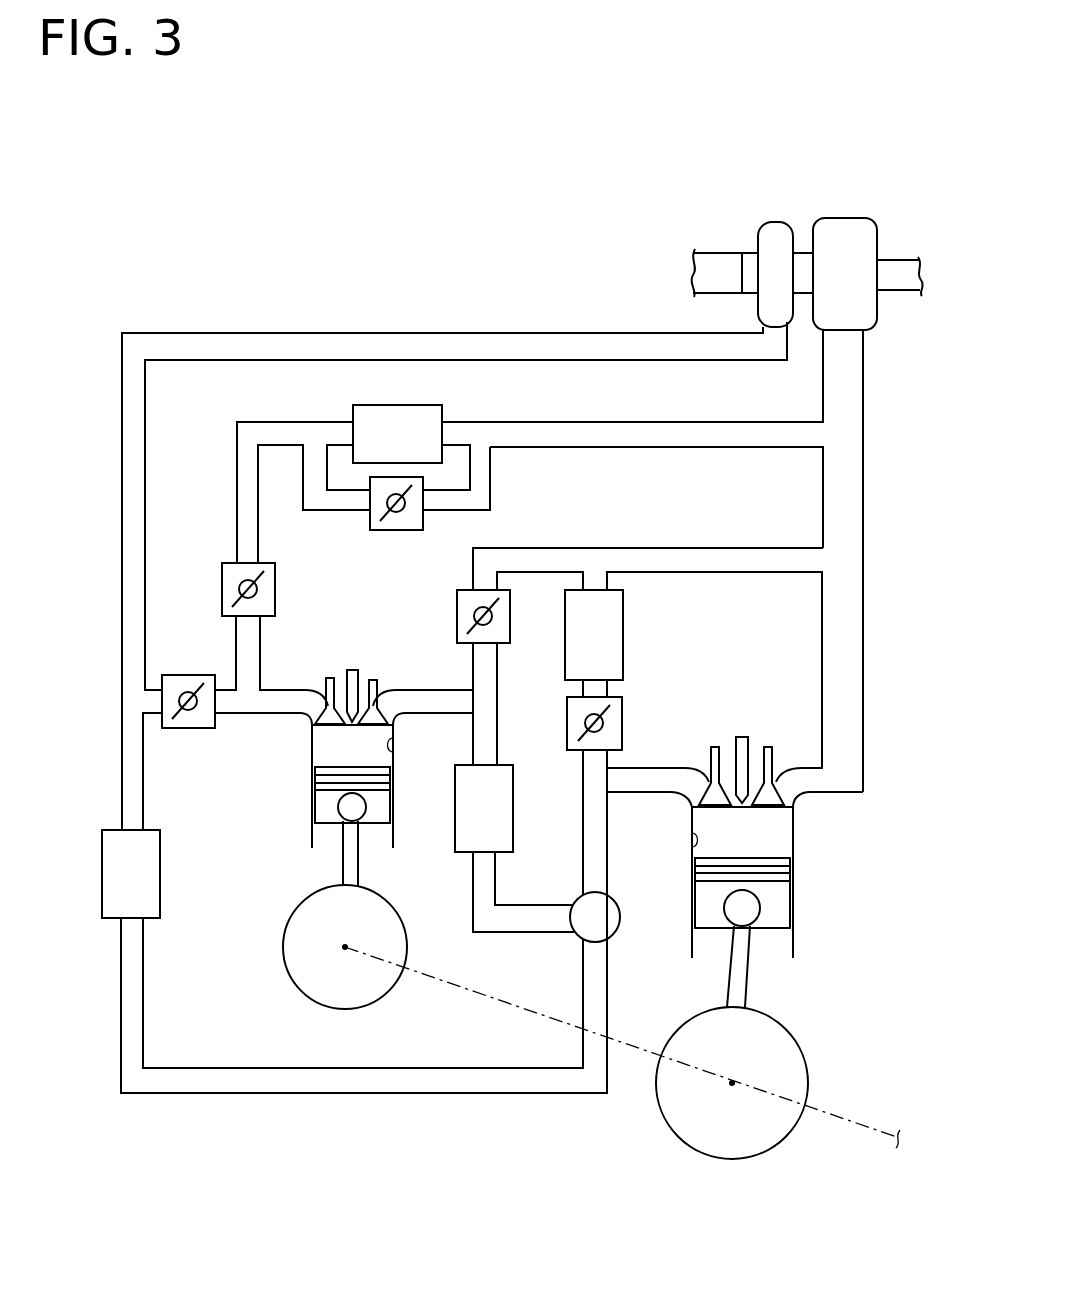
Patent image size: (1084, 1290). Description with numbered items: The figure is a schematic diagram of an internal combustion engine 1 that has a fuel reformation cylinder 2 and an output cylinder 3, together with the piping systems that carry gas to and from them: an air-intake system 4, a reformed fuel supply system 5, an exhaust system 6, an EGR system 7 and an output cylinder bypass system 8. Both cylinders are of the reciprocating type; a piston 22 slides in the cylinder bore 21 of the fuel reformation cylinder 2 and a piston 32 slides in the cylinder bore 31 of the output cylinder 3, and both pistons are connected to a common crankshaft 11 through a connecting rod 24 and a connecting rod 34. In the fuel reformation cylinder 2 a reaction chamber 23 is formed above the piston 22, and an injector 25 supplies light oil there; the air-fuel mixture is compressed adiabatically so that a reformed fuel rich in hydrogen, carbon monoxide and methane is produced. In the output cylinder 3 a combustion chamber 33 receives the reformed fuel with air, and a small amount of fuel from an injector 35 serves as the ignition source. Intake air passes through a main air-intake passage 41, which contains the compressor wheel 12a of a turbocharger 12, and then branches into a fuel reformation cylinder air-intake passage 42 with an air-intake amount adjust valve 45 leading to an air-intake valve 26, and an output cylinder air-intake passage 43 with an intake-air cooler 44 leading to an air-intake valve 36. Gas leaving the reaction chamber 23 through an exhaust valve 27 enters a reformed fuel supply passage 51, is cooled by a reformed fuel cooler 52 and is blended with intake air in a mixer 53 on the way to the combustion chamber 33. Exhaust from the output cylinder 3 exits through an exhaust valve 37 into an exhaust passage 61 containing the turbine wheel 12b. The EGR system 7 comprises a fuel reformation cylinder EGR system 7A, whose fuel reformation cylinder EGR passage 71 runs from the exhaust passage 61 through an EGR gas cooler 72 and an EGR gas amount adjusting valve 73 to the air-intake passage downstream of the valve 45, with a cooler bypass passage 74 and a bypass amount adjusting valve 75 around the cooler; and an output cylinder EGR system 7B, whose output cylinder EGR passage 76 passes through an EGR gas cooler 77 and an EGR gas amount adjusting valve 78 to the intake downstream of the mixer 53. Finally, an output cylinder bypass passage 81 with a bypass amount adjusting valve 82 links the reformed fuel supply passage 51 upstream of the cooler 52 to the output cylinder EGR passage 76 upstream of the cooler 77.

The internal combustion engine 1 is at (187, 206).
The fuel reformation cylinder 2 is at (347, 810).
The cylinder bore 21 is at (396, 742).
The piston 22 is at (385, 810).
The reaction chamber 23 is at (330, 747).
The connecting rod 24 is at (340, 867).
The injector 25 is at (355, 668).
The air-intake valve 26 is at (330, 676).
The exhaust valve 27 is at (380, 678).
The output cylinder 3 is at (746, 918).
The cylinder bore 31 is at (692, 840).
The piston 32 is at (700, 912).
The combustion chamber 33 is at (792, 838).
The connecting rod 34 is at (750, 987).
The injector 35 is at (742, 737).
The air-intake valve 36 is at (712, 748).
The exhaust valve 37 is at (772, 750).
The air-intake system 4 is at (245, 325).
The main air-intake passage 41 is at (388, 330).
The fuel reformation cylinder air-intake passage 42 is at (282, 690).
The output cylinder air-intake passage 43 is at (655, 772).
The intake-air cooler 44 is at (162, 873).
The air-intake amount adjust valve 45 is at (189, 735).
The reformed fuel supply system 5 is at (466, 865).
The reformed fuel supply passage 51 is at (477, 892).
The reformed fuel cooler 52 is at (505, 808).
The mixer 53 is at (580, 932).
The exhaust system 6 is at (870, 641).
The exhaust passage 61 is at (848, 716).
The EGR system 7 is at (648, 518).
The fuel reformation cylinder EGR system 7A is at (662, 451).
The output cylinder EGR system 7B is at (662, 545).
The fuel reformation cylinder EGR passage 71 is at (624, 432).
The EGR gas cooler 72 is at (383, 408).
The EGR gas amount adjusting valve 73 is at (221, 590).
The cooler bypass passage 74 is at (450, 512).
The bypass amount adjusting valve 75 is at (397, 531).
The output cylinder EGR passage 76 is at (760, 573).
The EGR gas cooler 77 is at (624, 635).
The EGR gas amount adjusting valve 78 is at (623, 712).
The output cylinder bypass system 8 is at (547, 541).
The output cylinder bypass passage 81 is at (494, 683).
The bypass amount adjusting valve 82 is at (512, 612).
The crankshaft 11 is at (452, 990).
The turbocharger 12 is at (806, 226).
The compressor wheel 12a is at (773, 232).
The turbine wheel 12b is at (845, 230).